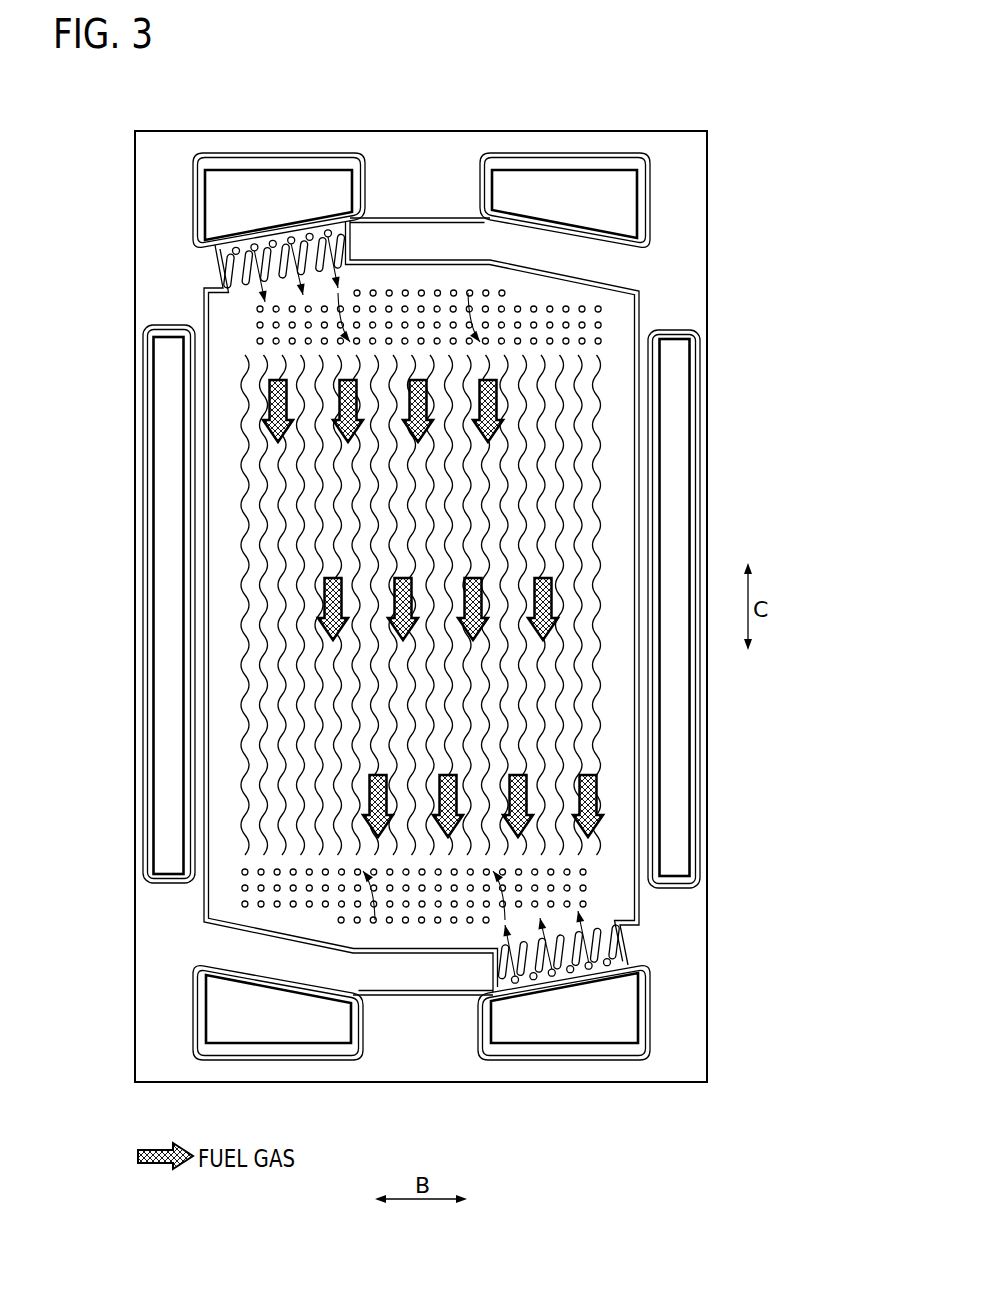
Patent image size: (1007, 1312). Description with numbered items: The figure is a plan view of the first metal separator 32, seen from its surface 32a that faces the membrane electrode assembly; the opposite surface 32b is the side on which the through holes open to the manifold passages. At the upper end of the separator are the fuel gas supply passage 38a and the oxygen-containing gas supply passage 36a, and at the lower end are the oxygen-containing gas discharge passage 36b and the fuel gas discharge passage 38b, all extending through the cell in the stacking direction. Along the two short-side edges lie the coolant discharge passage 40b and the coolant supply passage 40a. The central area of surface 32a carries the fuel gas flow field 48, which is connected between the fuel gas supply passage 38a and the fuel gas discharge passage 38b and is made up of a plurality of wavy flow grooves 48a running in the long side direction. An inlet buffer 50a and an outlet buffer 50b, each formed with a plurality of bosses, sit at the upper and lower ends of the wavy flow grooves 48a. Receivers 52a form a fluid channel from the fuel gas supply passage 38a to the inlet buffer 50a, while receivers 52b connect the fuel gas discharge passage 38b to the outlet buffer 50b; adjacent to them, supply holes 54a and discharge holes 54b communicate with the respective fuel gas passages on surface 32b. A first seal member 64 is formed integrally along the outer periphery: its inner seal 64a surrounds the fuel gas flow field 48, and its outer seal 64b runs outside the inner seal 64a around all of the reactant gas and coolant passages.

The first metal separator 32 is at (690, 84).
The surface 32a is at (153, 950).
The surface 32b is at (162, 991).
The oxygen-containing gas supply passage 36a is at (565, 200).
The oxygen-containing gas discharge passage 36b is at (278, 1013).
The fuel gas supply passage 38a is at (279, 200).
The fuel gas discharge passage 38b is at (564, 1013).
The coolant supply passage 40a is at (673, 480).
The coolant discharge passage 40b is at (170, 502).
The fuel gas flow field 48 is at (325, 605).
The wavy flow grooves 48a is at (292, 687).
The inlet buffer 50a is at (413, 297).
The outlet buffer 50b is at (430, 918).
The receivers 52a is at (230, 267).
The receivers 52b is at (613, 947).
The supply holes 54a is at (328, 229).
The discharge holes 54b is at (534, 981).
The first seal member 64 is at (375, 606).
The inner seal 64a is at (205, 462).
The outer seal 64b is at (143, 557).